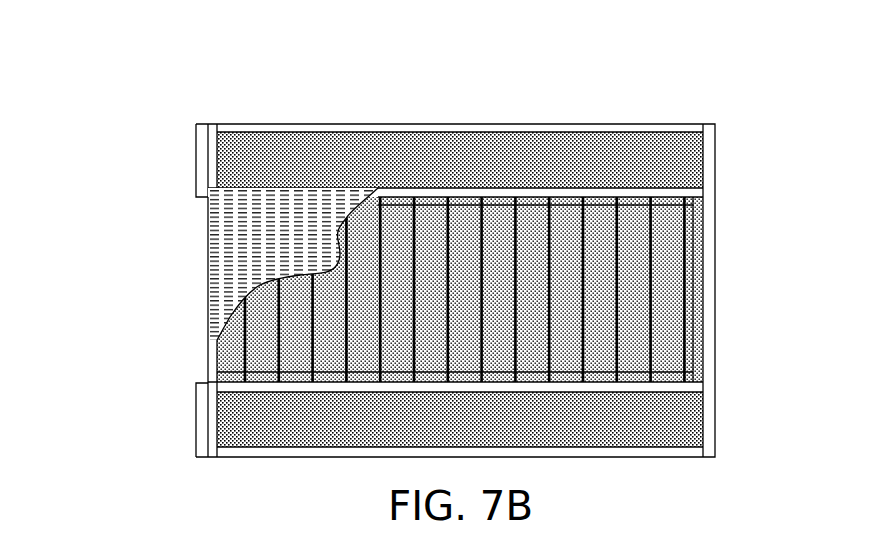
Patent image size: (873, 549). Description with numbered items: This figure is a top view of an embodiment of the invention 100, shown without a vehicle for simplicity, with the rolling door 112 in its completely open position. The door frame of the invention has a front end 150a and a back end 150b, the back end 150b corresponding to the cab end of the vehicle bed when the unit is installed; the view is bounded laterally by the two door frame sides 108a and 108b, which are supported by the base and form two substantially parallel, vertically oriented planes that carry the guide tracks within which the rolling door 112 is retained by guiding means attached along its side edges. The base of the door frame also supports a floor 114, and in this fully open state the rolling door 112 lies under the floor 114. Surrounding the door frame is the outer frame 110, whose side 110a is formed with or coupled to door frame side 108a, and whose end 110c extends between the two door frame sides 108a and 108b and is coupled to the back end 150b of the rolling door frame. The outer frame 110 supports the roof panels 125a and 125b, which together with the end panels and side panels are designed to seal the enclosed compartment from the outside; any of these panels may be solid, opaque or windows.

The invention 100 is at (706, 100).
The outer frame 110 is at (260, 452).
The side of outer frame 110a is at (232, 124).
The end of outer frame 110c is at (708, 338).
The roof panel 125a is at (475, 150).
The roof panel 125b is at (637, 430).
The side of door frame 108a is at (647, 192).
The side of door frame 108b is at (673, 383).
The rolling door 112 is at (665, 262).
The floor 114 is at (215, 206).
The front end 150a is at (180, 284).
The back end 150b is at (722, 308).